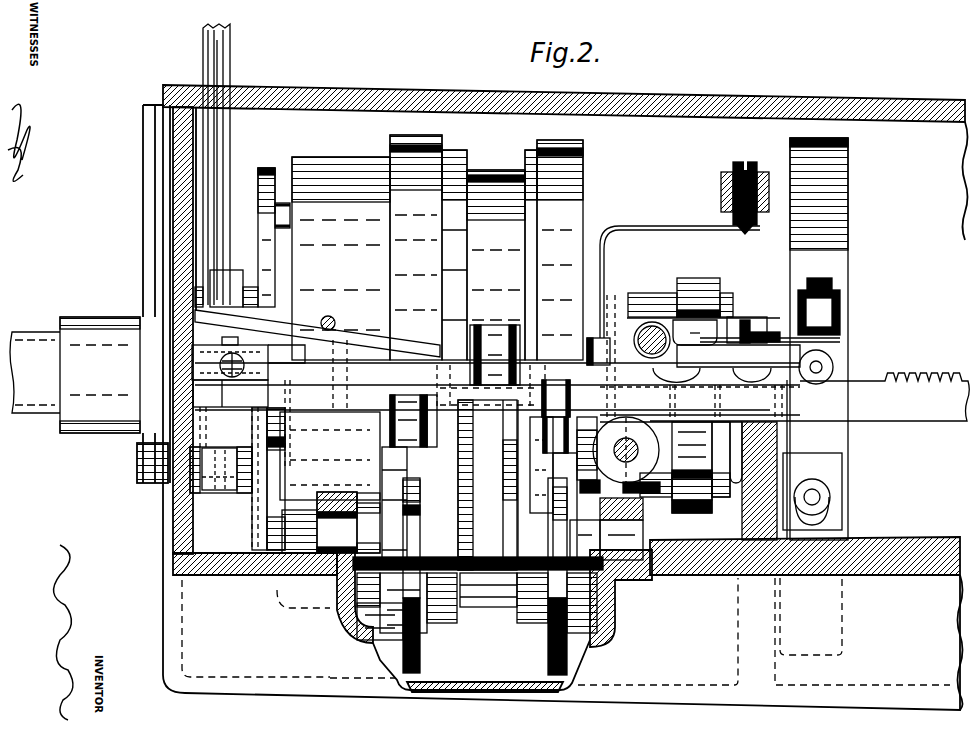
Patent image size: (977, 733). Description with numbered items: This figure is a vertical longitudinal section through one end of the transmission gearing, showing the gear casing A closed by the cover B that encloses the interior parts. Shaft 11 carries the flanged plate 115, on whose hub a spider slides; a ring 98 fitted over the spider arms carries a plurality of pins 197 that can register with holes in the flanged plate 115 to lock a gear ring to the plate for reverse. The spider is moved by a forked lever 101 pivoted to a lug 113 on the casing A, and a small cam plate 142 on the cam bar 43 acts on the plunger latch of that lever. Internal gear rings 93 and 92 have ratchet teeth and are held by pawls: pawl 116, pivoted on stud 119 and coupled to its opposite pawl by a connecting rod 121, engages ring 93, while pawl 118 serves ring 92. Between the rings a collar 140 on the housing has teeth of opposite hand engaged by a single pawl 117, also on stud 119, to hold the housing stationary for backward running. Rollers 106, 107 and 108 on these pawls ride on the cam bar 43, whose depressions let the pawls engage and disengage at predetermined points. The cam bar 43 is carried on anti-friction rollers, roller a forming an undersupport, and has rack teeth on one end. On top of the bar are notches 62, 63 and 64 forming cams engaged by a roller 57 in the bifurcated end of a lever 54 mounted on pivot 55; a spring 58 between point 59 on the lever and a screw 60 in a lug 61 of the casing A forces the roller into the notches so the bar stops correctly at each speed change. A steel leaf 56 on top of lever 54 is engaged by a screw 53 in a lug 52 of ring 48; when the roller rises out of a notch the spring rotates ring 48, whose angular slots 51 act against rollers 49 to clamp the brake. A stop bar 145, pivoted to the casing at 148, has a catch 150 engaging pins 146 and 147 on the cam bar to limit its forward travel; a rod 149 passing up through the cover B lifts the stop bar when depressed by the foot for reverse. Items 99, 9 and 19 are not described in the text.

The shaft 11 is at (35, 372).
The shaft flange 99 is at (98, 362).
The rod 149 is at (231, 62).
The pins 197 is at (281, 202).
The ring 98 is at (258, 184).
The flanged plate 115 is at (348, 271).
The gear ring 93 is at (415, 150).
The gear ring 92 is at (548, 146).
The pin 147 is at (466, 350).
The stop bar 145 is at (317, 333).
The pivot 148 is at (332, 316).
The pin 146 is at (307, 351).
The cam plate 142 is at (246, 363).
The catch 150 is at (432, 356).
The forked lever 101 is at (241, 451).
The lug 113 is at (237, 479).
The roller 108 is at (573, 403).
The roller 106 is at (392, 418).
The roller 107 is at (487, 399).
The pawl 117 is at (488, 485).
The pawl 116 is at (391, 507).
The pawl 118 is at (552, 492).
The stud 119 is at (331, 522).
The bearing 9 is at (316, 498).
The connecting rod 121 is at (421, 657).
The collar 140 is at (487, 607).
The roller a is at (618, 455).
The notch 62 is at (677, 381).
The notch 63 is at (750, 382).
The partition wall 19 is at (744, 524).
The ring 48 is at (832, 266).
The roller 49 is at (822, 481).
The angular slot 51 is at (828, 501).
The cam bar 43 is at (809, 397).
The roller 57 is at (834, 362).
The notch 64 is at (812, 384).
The steel leaf 56 is at (842, 343).
The lug 52 is at (840, 316).
The screw 53 is at (832, 286).
The point 59 is at (745, 316).
The lever 54 is at (680, 319).
The pivot 55 is at (636, 346).
The spring 58 is at (603, 270).
The lug 61 is at (757, 178).
The screw 60 is at (760, 222).
The gear casing A is at (910, 226).
The cover B is at (640, 104).